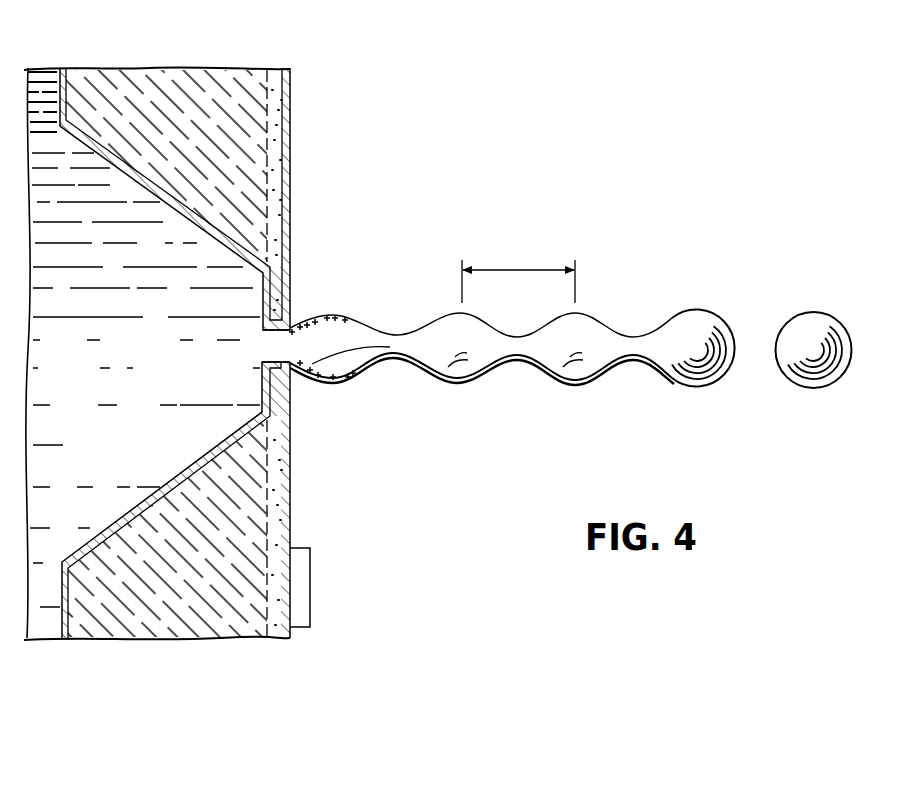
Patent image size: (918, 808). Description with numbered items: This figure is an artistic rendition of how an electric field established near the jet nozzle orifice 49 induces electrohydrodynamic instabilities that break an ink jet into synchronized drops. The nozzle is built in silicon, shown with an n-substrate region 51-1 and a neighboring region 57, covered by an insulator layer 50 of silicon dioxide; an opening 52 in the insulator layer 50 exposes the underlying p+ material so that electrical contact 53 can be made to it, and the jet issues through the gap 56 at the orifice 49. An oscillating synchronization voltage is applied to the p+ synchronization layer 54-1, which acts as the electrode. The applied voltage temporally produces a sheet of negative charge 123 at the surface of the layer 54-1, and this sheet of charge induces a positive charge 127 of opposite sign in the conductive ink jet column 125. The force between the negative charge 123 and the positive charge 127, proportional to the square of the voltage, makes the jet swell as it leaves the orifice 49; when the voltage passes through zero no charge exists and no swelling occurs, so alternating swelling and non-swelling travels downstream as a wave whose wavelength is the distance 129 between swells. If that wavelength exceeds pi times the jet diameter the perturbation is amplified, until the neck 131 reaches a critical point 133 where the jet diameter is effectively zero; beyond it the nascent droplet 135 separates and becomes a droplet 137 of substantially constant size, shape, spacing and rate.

The wafer edge region 57 is at (46, 80).
The n-type substrate 51-1 is at (200, 84).
The synchronization layer 54-1 is at (283, 128).
The charge 123 is at (288, 281).
The jet nozzle orifice 49 is at (284, 340).
The additional charge 127 is at (334, 320).
The ink jet column 125 is at (347, 386).
The nozzle opening 56 is at (257, 385).
The insulator layer 50 is at (291, 437).
The opening 52 is at (291, 568).
The electrode contact 53 is at (309, 606).
The distance between swells 129 is at (541, 270).
The neck 131 is at (519, 337).
The critical point 133 is at (636, 356).
The nascent droplet 135 is at (696, 312).
The droplet 137 is at (814, 313).